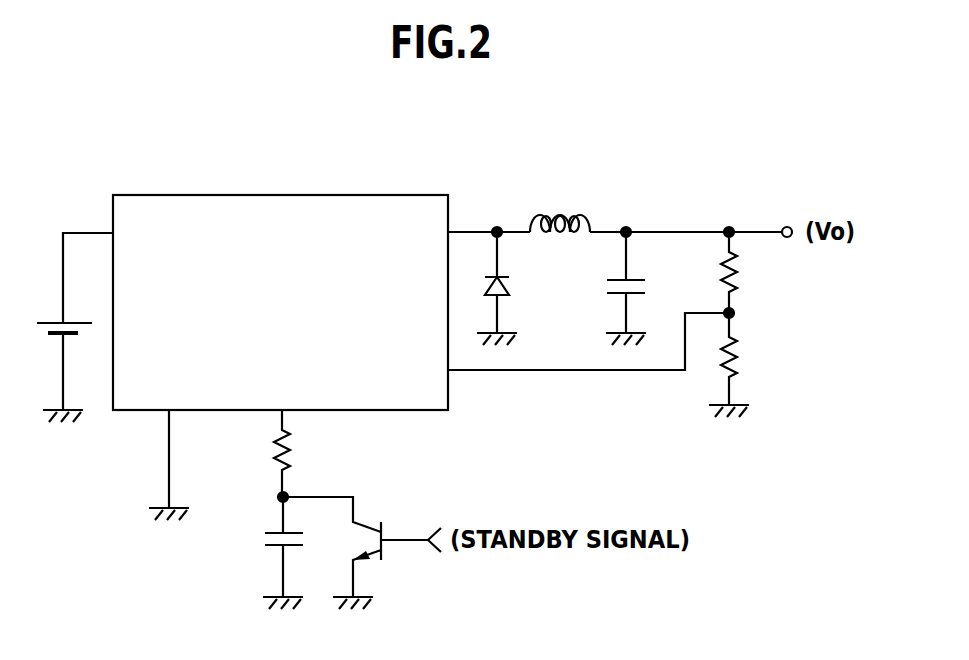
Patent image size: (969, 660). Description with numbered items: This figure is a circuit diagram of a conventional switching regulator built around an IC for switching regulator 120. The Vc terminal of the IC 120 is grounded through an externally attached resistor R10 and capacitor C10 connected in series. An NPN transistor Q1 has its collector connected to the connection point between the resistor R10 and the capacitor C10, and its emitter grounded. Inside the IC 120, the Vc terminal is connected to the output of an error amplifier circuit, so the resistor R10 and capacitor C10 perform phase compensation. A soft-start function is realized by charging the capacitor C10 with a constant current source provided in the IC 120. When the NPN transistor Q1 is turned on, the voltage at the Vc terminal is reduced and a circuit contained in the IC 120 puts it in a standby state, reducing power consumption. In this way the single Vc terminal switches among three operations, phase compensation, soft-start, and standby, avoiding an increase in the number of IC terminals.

The IC for switching regulator 120 is at (263, 194).
The resistor R10 is at (254, 453).
The capacitor C10 is at (257, 553).
The NPN transistor Q1 is at (362, 548).